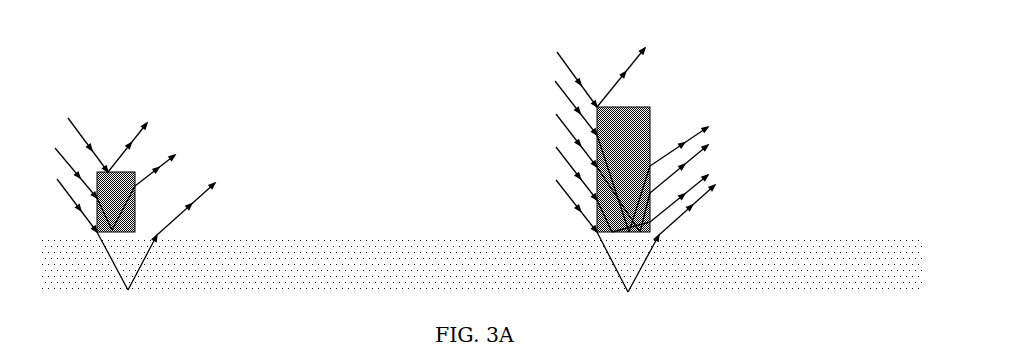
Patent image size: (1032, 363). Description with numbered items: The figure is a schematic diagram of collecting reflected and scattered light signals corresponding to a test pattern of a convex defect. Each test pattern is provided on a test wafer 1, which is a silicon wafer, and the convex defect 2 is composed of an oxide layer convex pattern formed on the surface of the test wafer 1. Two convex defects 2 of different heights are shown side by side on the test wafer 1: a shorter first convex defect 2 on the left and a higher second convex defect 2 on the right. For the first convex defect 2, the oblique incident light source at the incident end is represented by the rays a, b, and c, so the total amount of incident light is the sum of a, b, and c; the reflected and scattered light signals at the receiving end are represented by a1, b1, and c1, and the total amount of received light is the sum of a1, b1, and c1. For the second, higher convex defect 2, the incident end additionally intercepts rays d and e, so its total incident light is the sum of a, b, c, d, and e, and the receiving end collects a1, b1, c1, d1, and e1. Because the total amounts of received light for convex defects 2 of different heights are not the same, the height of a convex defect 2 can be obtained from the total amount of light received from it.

The test wafer 1 is at (327, 257).
The convex defect 2 is at (643, 133).
The oblique incident light a is at (342, 230).
The oblique incident light b is at (342, 182).
The oblique incident light c is at (346, 160).
The oblique incident light d is at (593, 144).
The oblique incident light e is at (566, 66).
The reflected and scattered light signal a1 is at (455, 197).
The reflected and scattered light signal b1 is at (444, 131).
The reflected and scattered light signal c1 is at (430, 142).
The reflected and scattered light signal d1 is at (700, 186).
The reflected and scattered light signal e1 is at (640, 68).